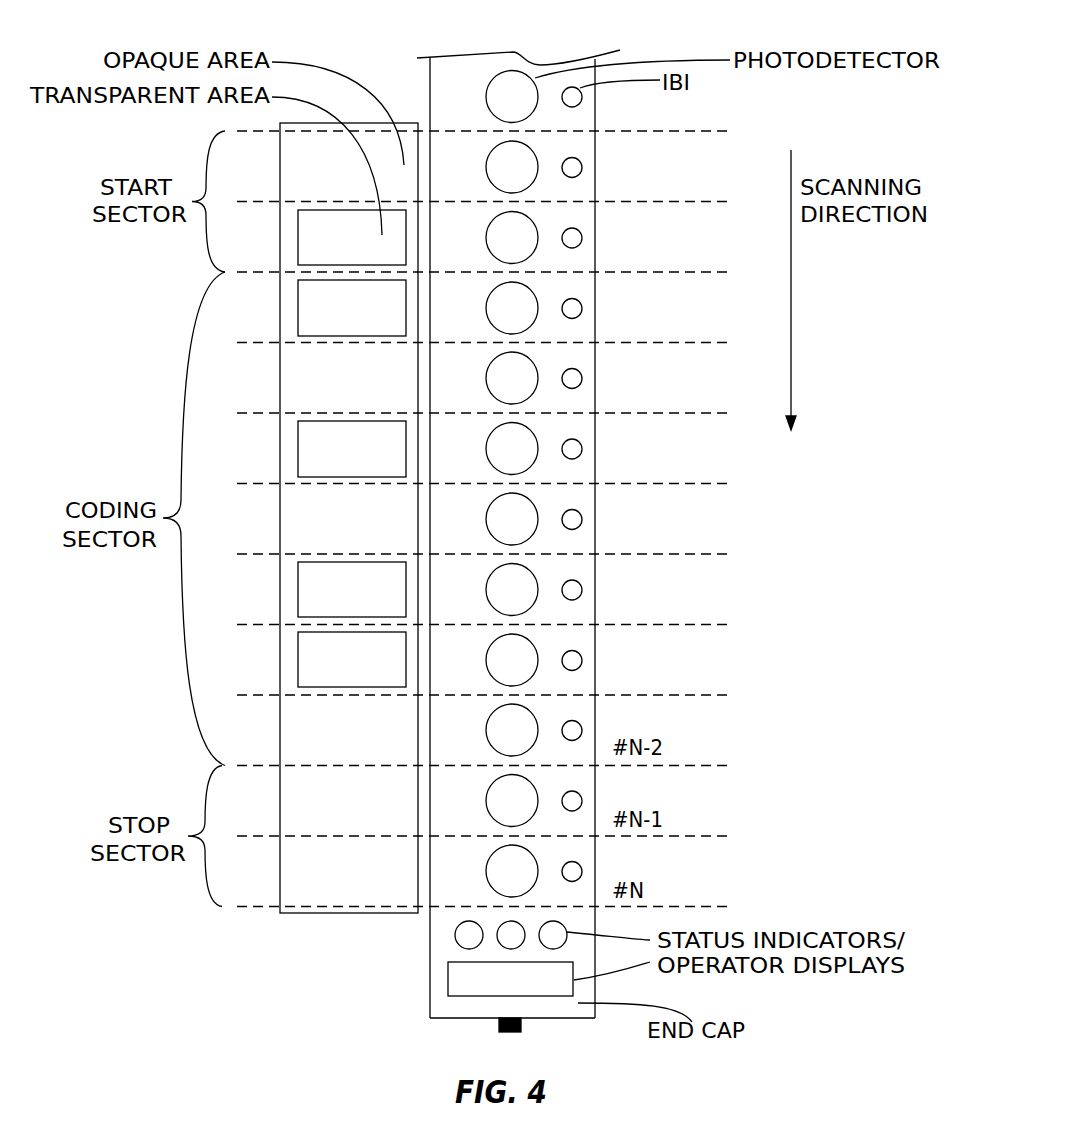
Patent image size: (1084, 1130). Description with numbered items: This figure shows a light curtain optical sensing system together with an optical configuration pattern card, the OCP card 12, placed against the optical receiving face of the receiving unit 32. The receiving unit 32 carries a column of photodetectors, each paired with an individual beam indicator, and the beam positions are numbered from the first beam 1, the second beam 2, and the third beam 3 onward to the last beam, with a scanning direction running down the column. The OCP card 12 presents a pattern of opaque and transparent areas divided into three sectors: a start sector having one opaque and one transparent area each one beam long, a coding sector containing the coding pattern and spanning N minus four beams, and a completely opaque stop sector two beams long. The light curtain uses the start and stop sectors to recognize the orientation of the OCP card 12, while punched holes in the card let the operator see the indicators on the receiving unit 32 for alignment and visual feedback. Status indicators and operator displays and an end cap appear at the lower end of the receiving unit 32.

The OCP card 12 is at (278, 880).
The receiving unit 32 is at (525, 521).
The photodetector position # 1 is at (560, 99).
The photodetector position # 2 is at (560, 169).
The photodetector position # 3 is at (560, 239).